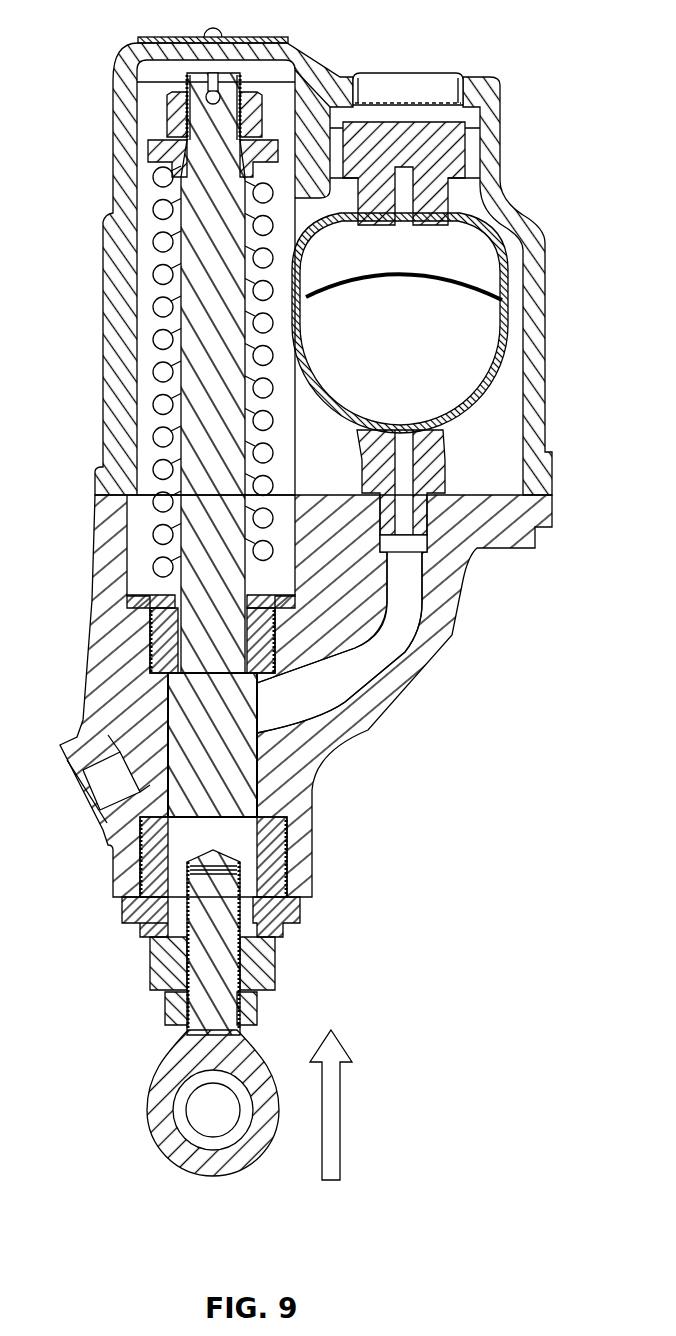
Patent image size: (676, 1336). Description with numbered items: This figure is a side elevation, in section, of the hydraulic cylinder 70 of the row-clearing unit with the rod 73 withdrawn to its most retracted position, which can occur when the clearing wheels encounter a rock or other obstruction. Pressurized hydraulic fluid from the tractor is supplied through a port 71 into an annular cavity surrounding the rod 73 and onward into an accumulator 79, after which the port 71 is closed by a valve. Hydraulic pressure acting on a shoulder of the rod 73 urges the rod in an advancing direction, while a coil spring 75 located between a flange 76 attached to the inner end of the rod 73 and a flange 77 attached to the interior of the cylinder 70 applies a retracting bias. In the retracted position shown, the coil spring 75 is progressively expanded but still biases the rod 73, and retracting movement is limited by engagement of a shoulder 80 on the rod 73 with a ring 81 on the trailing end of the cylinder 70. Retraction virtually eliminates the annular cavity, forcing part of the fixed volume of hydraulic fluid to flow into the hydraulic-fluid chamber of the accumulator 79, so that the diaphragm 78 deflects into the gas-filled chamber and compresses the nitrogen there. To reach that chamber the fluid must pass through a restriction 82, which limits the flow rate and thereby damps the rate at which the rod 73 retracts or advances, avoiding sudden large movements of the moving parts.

The hydraulic cylinder 70 is at (103, 373).
The port 71 is at (77, 785).
The rod 73 is at (262, 777).
The coil spring 75 is at (150, 403).
The flange 76 is at (147, 152).
The flange 77 is at (130, 595).
The diaphragm 78 is at (450, 267).
The accumulator 79 is at (498, 393).
The shoulder 80 is at (155, 935).
The ring 81 is at (140, 925).
The restriction 82 is at (403, 520).